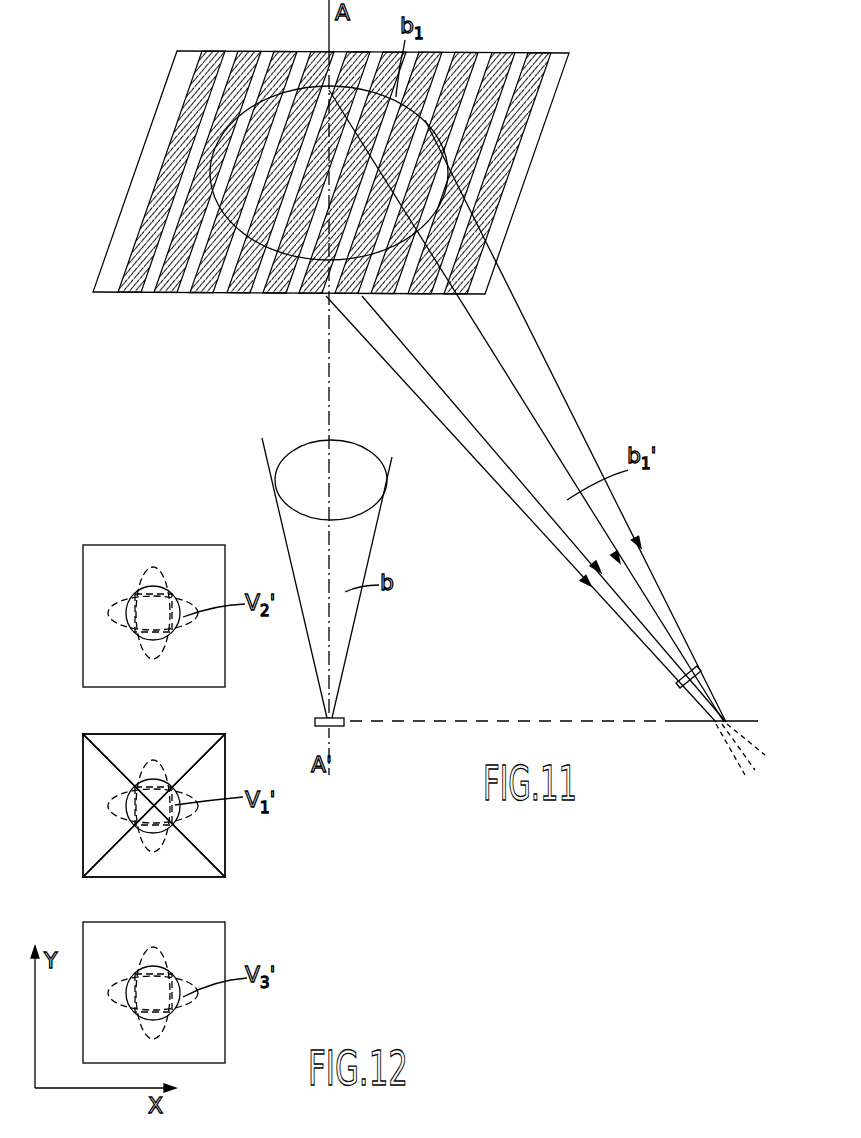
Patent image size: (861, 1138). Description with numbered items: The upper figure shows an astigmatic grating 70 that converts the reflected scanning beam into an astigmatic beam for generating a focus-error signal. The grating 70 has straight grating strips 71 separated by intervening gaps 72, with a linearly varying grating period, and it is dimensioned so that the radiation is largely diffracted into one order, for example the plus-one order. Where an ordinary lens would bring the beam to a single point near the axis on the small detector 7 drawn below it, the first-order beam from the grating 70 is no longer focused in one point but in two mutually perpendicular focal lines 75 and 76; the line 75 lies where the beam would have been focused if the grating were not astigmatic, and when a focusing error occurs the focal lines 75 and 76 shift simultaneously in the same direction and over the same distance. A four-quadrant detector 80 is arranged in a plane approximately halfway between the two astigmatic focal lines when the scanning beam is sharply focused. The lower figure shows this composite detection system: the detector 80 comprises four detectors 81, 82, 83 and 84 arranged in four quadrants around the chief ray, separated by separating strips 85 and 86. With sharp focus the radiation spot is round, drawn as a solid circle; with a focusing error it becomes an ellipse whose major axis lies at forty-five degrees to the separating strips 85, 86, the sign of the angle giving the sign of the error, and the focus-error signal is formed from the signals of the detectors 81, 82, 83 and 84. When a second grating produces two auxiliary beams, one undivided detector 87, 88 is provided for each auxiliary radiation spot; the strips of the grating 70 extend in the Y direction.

In FIG. 11, the astigmatic grating 70 is at (560, 107).
In FIG. 11, the grating strips 71 is at (251, 57).
In FIG. 11, the grating gap (transparent stripe) 72 is at (307, 60).
In FIG. 11, the detector 7 is at (333, 727).
In FIG. 11, the focal line 75 is at (687, 678).
In FIG. 11, the focal line 76 is at (742, 760).
In FIG. 11, the four-quadrant detector 80 is at (738, 720).
In FIG. 12, the four-quadrant detector 80 is at (251, 887).
In FIG. 12, the detector 81 is at (190, 748).
In FIG. 12, the detector 82 is at (95, 777).
In FIG. 12, the detector 83 is at (115, 867).
In FIG. 12, the detector 84 is at (218, 852).
In FIG. 12, the separating strip 85 is at (213, 747).
In FIG. 12, the separating strip 86 is at (203, 868).
In FIG. 12, the undivided detector 87 is at (213, 660).
In FIG. 12, the undivided detector 88 is at (213, 1030).